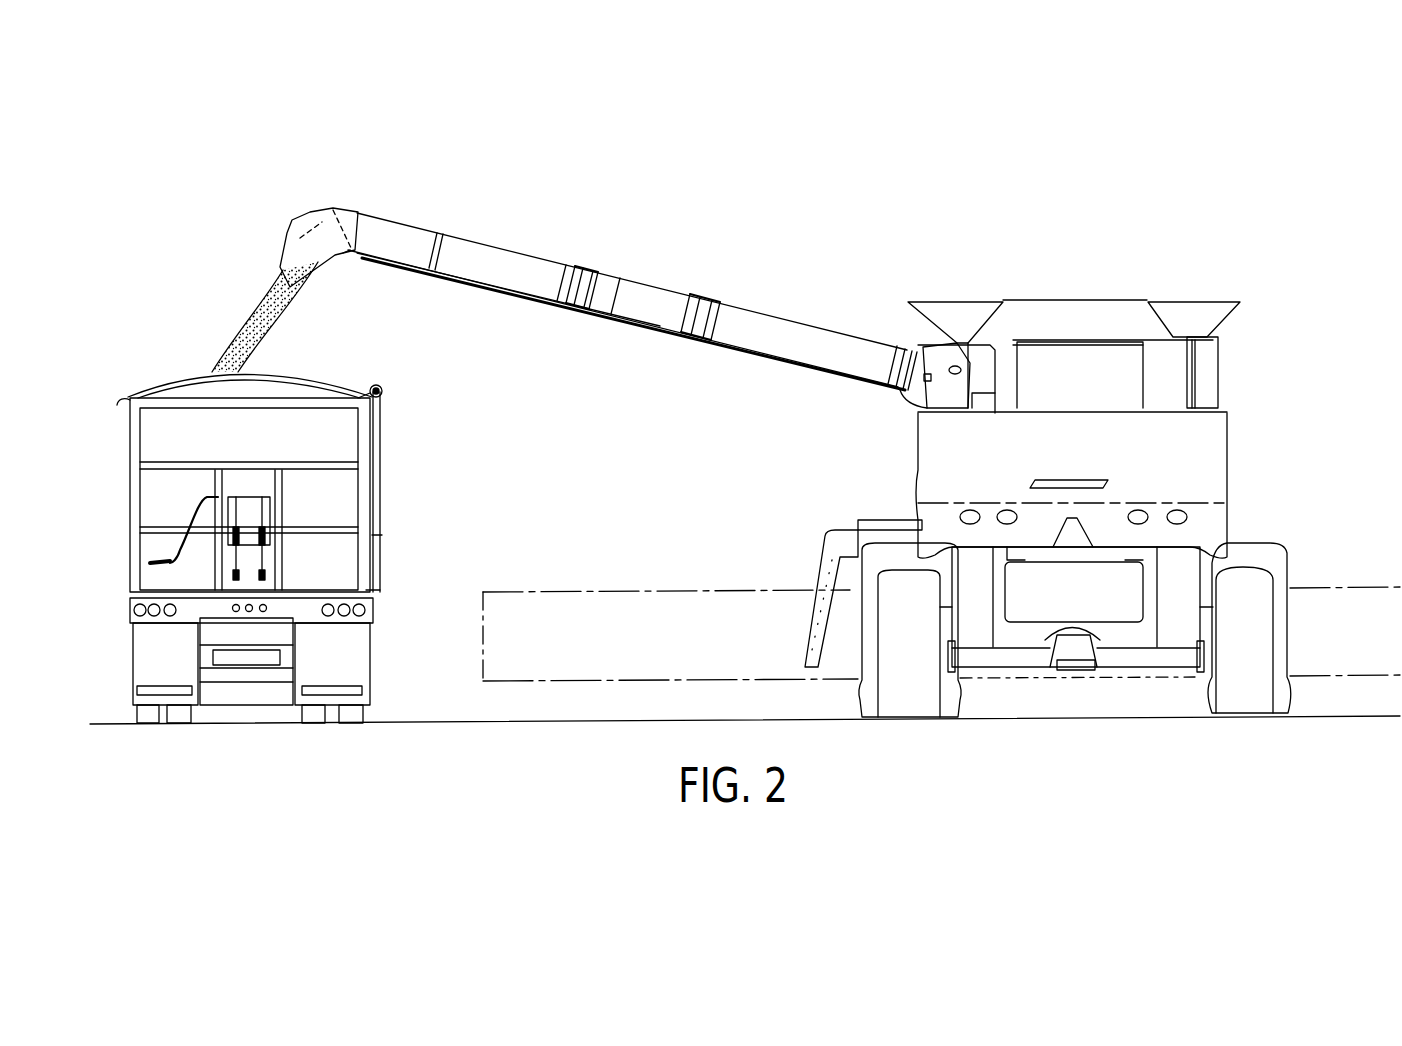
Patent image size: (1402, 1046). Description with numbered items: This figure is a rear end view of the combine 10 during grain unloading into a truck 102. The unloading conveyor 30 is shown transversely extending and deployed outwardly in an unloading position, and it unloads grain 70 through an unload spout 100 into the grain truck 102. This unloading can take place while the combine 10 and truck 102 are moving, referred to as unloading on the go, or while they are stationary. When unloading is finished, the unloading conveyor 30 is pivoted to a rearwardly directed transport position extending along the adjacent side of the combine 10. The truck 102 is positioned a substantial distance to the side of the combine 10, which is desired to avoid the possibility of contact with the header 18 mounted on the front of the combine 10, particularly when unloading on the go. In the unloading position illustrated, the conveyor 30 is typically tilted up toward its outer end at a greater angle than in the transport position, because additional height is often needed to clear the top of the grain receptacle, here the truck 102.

The combine 10 is at (1268, 258).
The header 18 is at (636, 590).
The unloading conveyor 30 is at (662, 290).
The grain 70 is at (238, 313).
The unload spout 100 is at (316, 200).
The truck 102 is at (318, 380).